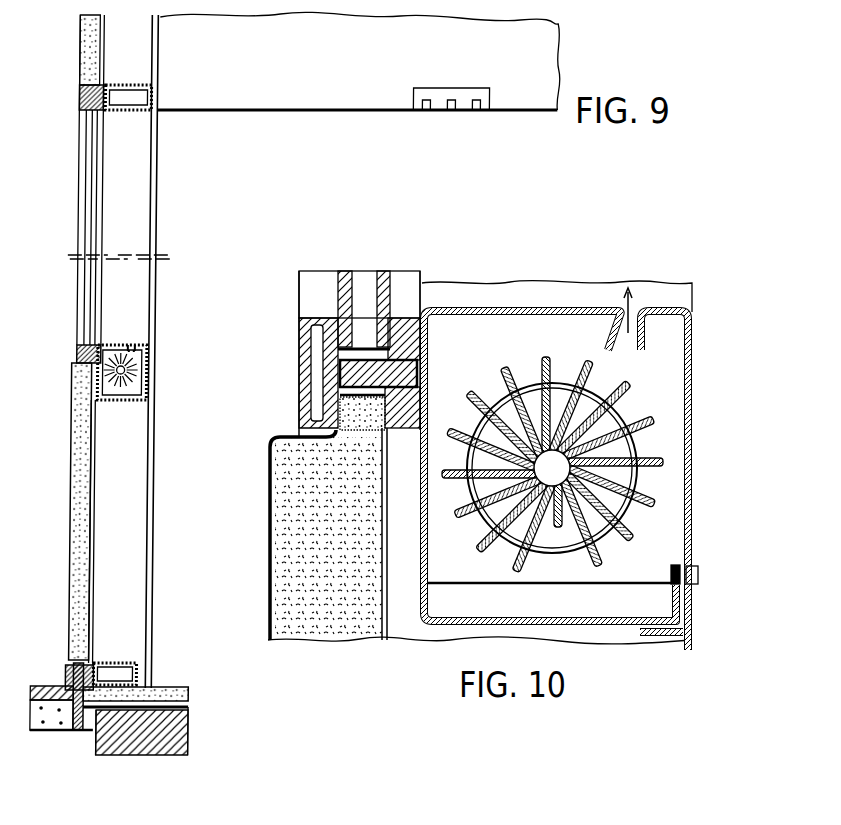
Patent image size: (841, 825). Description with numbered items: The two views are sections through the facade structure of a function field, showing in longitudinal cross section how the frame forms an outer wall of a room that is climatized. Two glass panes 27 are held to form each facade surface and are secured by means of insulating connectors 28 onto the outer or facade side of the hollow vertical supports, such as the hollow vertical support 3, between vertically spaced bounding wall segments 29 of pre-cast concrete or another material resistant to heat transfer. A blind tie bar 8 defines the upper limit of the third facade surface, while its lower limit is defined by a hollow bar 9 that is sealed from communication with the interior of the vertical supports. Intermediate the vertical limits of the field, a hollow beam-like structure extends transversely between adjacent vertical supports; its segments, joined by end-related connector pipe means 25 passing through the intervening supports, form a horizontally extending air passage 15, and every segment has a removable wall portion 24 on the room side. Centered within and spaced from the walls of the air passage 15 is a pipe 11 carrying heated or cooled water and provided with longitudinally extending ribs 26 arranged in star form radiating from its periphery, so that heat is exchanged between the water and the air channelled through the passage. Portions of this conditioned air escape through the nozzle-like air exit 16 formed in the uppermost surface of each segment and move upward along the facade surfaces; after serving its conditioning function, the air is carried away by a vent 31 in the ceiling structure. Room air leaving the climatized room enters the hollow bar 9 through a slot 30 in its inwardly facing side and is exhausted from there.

In FIG. 9, the hollow vertical support 3 is at (153, 200).
In FIG. 9, the blind tie bar 8 is at (150, 96).
In FIG. 9, the hollow bar 9 is at (128, 664).
In FIG. 9, the pipe 11 is at (126, 395).
In FIG. 10, the pipe 11 is at (600, 484).
In FIG. 9, the air passage 15 is at (160, 372).
In FIG. 10, the air passage 15 is at (542, 310).
In FIG. 9, the air exit 16 is at (138, 346).
In FIG. 10, the air exit 16 is at (624, 310).
In FIG. 10, the removable wall portion 24 is at (693, 386).
In FIG. 10, the connector pipe means 25 is at (648, 449).
In FIG. 10, the fan blades 26 is at (640, 528).
In FIG. 9, the glass panes 27 is at (98, 210).
In FIG. 10, the glass panes 27 is at (383, 295).
In FIG. 10, the insulating connectors 28 is at (428, 430).
In FIG. 9, the wall 29 is at (80, 476).
In FIG. 10, the wall 29 is at (284, 438).
In FIG. 9, the slot 30 is at (147, 681).
In FIG. 9, the vent 31 is at (484, 112).